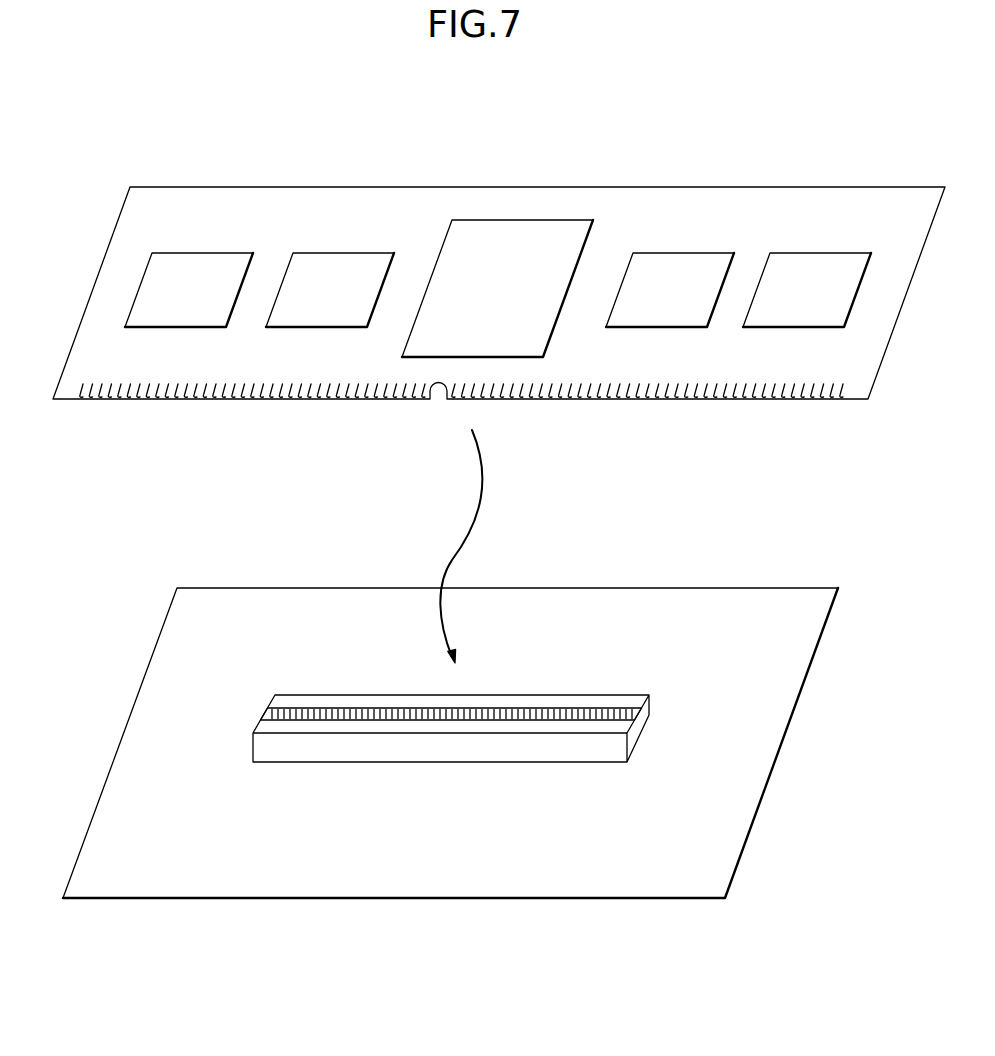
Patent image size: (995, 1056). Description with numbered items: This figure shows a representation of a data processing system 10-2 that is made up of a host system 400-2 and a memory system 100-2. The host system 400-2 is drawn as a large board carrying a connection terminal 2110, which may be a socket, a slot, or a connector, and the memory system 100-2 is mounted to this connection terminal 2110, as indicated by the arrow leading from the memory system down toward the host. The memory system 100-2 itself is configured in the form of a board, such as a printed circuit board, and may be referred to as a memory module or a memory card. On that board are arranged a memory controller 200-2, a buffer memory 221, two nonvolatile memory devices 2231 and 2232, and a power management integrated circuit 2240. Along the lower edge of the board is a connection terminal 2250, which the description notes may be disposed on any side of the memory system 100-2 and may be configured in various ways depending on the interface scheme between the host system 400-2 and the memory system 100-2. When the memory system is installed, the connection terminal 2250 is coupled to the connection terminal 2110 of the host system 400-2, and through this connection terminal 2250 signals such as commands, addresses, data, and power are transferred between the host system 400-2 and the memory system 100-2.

The data processing system 10-2 is at (140, 105).
The memory system 100-2 is at (499, 293).
The power management integrated circuit 2240 is at (189, 290).
The buffer memory 221 is at (330, 290).
The memory controller 200-2 is at (497, 288).
The nonvolatile memory device 2231 is at (670, 290).
The nonvolatile memory device 2232 is at (807, 290).
The connection terminal 2250 is at (105, 393).
The host system 400-2 is at (450, 743).
The connection terminal 2110 is at (677, 690).